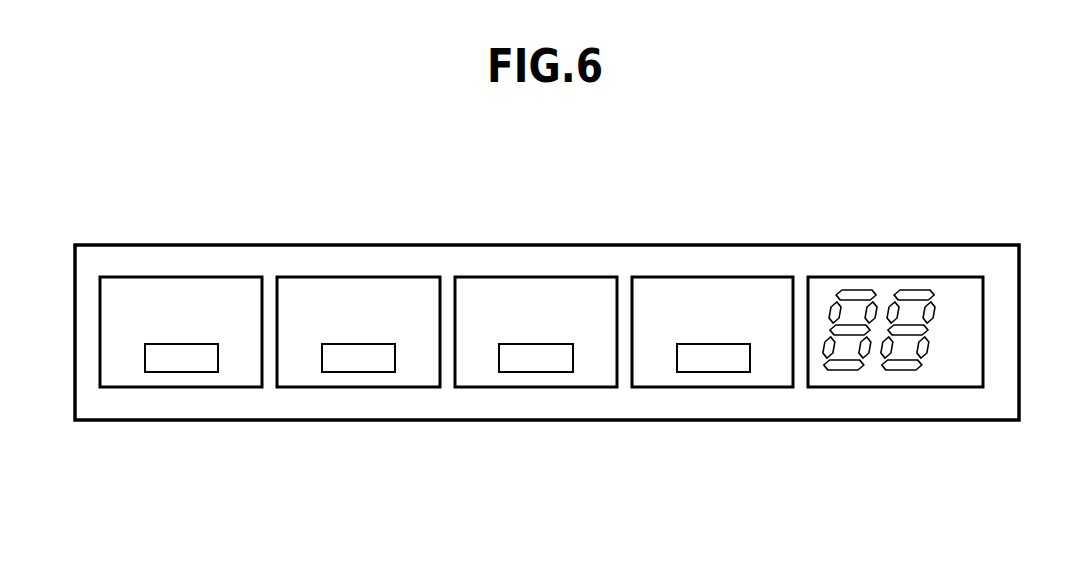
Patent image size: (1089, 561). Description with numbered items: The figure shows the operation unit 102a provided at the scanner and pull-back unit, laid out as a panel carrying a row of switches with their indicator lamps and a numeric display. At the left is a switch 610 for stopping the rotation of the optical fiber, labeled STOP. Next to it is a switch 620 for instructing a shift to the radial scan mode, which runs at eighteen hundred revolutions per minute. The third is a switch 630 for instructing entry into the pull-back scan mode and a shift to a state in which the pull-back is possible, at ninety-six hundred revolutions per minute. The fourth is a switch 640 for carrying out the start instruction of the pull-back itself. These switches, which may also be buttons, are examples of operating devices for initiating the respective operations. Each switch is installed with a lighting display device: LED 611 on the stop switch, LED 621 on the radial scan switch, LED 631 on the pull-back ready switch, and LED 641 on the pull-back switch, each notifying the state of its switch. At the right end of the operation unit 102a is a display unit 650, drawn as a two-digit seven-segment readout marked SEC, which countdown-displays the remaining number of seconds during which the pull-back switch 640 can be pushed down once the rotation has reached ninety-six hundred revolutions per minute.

The operation unit 102a is at (1019, 297).
The switch 610 is at (202, 276).
The LED 611 is at (170, 373).
The switch 620 is at (380, 277).
The LED 621 is at (350, 373).
The switch 630 is at (557, 277).
The LED 631 is at (525, 373).
The switch 640 is at (733, 277).
The LED 641 is at (700, 373).
The display unit 650 is at (908, 277).